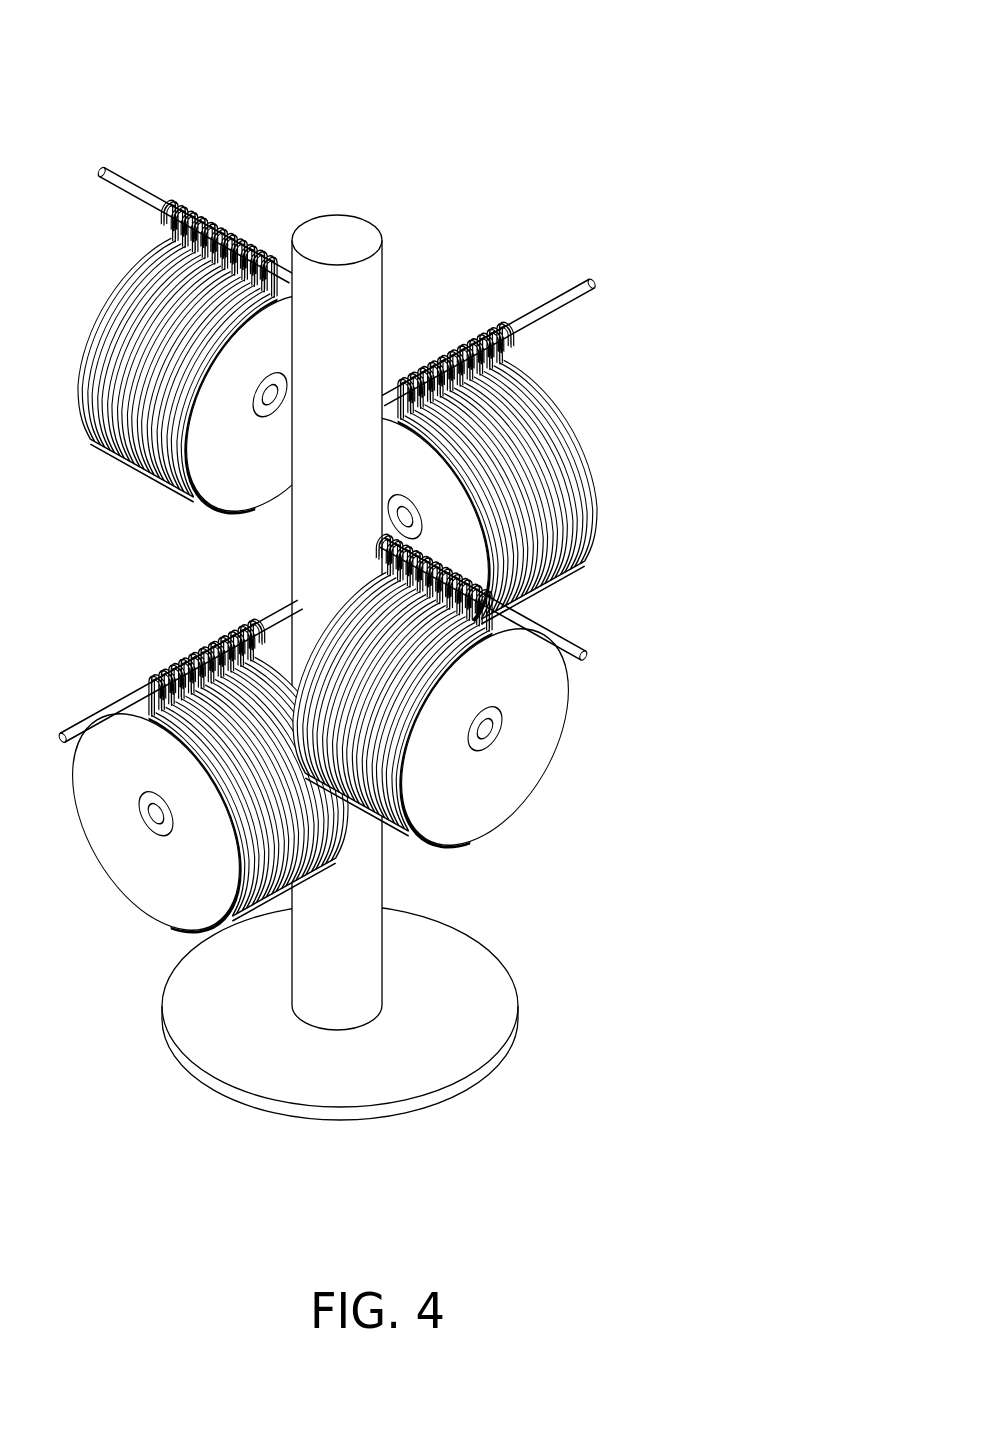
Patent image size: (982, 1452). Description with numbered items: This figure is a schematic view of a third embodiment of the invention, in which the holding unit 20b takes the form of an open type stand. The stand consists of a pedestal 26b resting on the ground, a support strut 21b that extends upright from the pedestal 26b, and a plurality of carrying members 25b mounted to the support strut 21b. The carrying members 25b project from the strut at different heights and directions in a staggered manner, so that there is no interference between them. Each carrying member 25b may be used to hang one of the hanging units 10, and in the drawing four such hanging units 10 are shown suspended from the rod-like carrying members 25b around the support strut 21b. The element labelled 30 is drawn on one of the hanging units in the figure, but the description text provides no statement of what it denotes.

The hanging unit 10 is at (430, 565).
The holding unit 20b is at (399, 565).
The support strut 21b is at (347, 910).
The carrying member 25b is at (535, 313).
The pedestal 26b is at (438, 1025).
The disc holder 30 is at (235, 455).